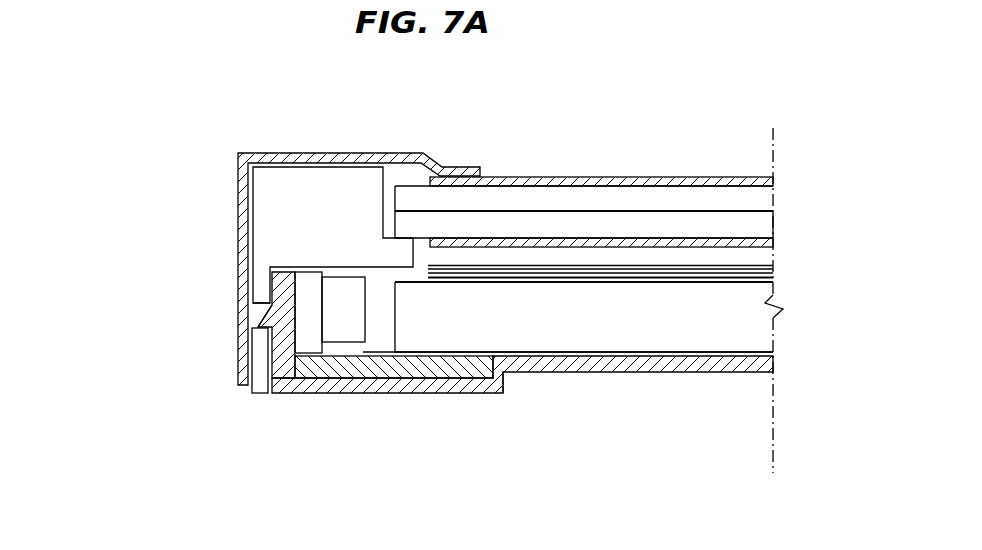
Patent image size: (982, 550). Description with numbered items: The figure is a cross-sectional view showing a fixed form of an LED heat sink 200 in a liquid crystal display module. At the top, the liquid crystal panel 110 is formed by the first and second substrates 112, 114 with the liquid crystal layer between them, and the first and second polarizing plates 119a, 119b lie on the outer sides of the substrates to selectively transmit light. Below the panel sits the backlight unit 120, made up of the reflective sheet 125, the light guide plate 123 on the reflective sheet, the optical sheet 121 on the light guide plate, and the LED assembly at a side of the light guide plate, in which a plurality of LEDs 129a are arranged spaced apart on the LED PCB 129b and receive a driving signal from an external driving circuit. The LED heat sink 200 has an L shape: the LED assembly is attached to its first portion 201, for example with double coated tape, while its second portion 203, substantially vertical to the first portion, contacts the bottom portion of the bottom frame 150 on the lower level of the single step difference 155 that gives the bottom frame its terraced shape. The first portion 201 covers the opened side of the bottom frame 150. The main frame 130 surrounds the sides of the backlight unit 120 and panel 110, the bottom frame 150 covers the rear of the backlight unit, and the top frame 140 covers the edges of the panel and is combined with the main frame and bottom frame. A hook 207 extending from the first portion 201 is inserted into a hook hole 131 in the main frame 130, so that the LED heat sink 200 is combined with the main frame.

The liquid crystal panel 110 is at (584, 145).
The first substrate 112 is at (530, 227).
The second substrate 114 is at (487, 197).
The first polarizing plate 119a is at (693, 240).
The second polarizing plate 119b is at (625, 178).
The backlight unit 120 is at (503, 405).
The optical sheet 121 is at (483, 283).
The light guide plate 123 is at (285, 465).
The reflective sheet 125 is at (428, 335).
The LED 129a is at (340, 330).
The LED PCB 129b is at (300, 342).
The main frame 130 is at (268, 218).
The hook hole 131 is at (260, 311).
The top frame 140 is at (317, 158).
The bottom frame 150 is at (697, 363).
The step difference 155 is at (507, 379).
The LED heat sink 200 is at (176, 336).
The first portion 201 is at (282, 343).
The second portion 203 is at (260, 398).
The hook 207 is at (257, 322).